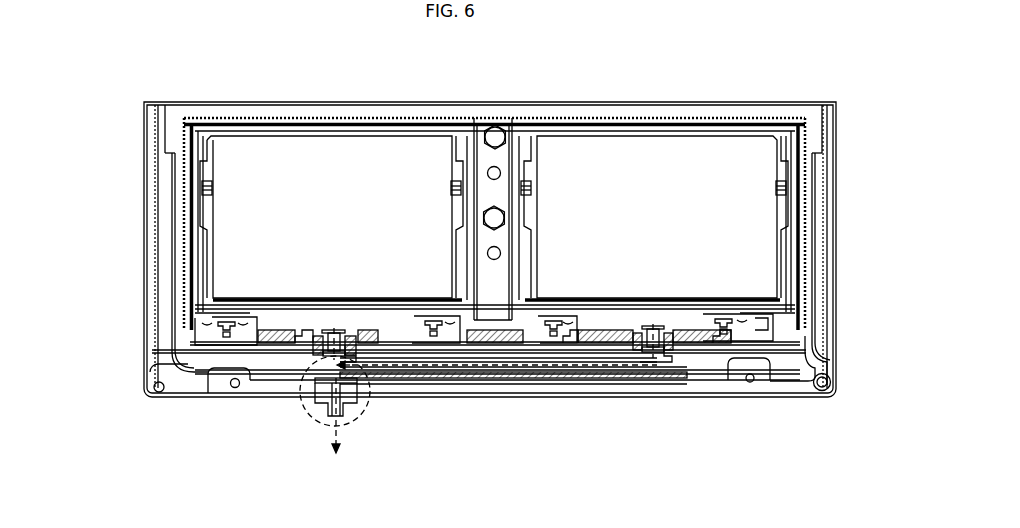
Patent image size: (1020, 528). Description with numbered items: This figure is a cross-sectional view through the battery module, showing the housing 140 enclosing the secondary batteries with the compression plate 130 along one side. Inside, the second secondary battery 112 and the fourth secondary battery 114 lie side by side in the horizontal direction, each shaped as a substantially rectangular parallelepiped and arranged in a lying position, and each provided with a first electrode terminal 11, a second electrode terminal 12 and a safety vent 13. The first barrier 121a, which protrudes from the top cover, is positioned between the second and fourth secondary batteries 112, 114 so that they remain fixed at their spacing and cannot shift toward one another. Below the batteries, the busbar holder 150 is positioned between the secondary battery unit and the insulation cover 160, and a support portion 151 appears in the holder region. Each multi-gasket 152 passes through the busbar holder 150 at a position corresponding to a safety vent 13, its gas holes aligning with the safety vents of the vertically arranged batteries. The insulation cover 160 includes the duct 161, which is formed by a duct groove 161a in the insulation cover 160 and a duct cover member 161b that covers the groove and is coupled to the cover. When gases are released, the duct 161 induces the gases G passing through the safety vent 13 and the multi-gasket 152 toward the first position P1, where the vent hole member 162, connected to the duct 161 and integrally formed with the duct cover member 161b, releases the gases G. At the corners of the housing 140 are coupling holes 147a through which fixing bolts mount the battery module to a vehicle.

The first electrode terminal 11 is at (247, 322).
The second electrode terminal 12 is at (428, 317).
The safety vent 13 is at (332, 328).
The second secondary battery 112 is at (318, 236).
The fourth secondary battery 114 is at (640, 236).
The first barrier 121a is at (495, 157).
The compression plate 130 is at (180, 207).
The housing 140 is at (155, 311).
The coupling hole 147a is at (823, 391).
The busbar holder 150 is at (281, 350).
The support member 151 is at (198, 370).
The multi-gasket 152 is at (356, 367).
The insulation cover 160 is at (226, 374).
The duct 161 is at (453, 477).
The duct groove 161a is at (467, 350).
The duct cover member 161b is at (533, 378).
The vent hole member 162 is at (322, 407).
The gases G is at (334, 450).
The first position P1 is at (357, 417).